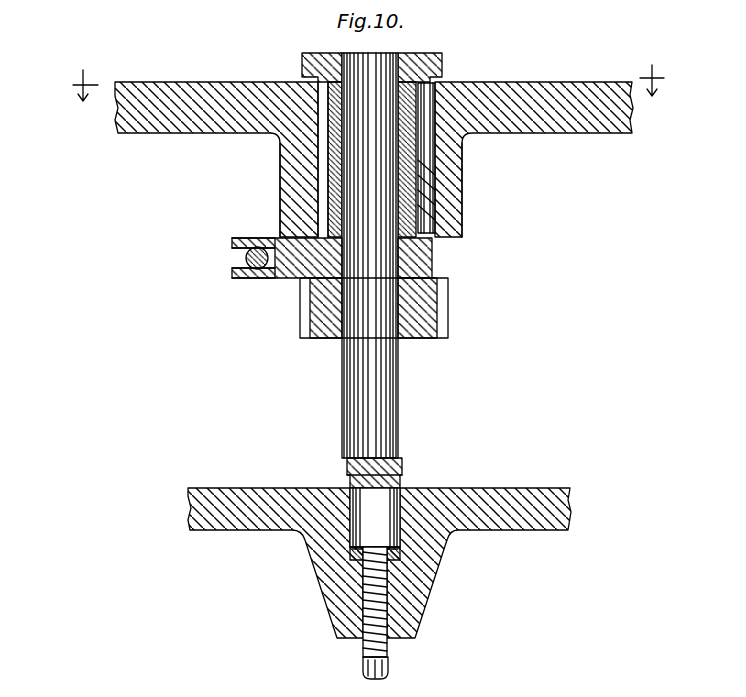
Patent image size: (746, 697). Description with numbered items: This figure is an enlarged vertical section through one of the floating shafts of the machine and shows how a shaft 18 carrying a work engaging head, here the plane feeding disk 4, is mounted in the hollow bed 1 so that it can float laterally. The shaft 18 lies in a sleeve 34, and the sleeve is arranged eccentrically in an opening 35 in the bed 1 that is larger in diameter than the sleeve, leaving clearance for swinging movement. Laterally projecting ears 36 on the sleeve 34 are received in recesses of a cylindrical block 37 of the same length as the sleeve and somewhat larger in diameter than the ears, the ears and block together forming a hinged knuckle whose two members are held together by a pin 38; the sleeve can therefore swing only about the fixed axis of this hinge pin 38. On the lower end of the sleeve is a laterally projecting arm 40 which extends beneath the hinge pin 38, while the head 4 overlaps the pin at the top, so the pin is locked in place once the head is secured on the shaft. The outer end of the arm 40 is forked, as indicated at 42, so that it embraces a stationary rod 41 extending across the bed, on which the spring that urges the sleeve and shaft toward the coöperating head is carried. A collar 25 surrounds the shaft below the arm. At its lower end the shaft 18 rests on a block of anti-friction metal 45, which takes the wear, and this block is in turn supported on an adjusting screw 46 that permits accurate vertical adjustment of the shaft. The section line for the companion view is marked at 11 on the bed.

The bed 1 is at (522, 86).
The plane disk 4 is at (446, 57).
The cone shaped projection 11 is at (50, 91).
The shaft 18 is at (357, 65).
The collar member 25 is at (432, 308).
The sleeve 34 is at (338, 161).
The opening 35 is at (322, 115).
The ears 36 is at (450, 105).
The cylindrical block 37 is at (467, 148).
The pin 38 is at (465, 171).
The arm 40 is at (271, 280).
The stationary rod 41 is at (244, 262).
The fork 42 is at (250, 239).
The block of anti-friction metal 45 is at (378, 508).
The adjusting screw 46 is at (364, 641).